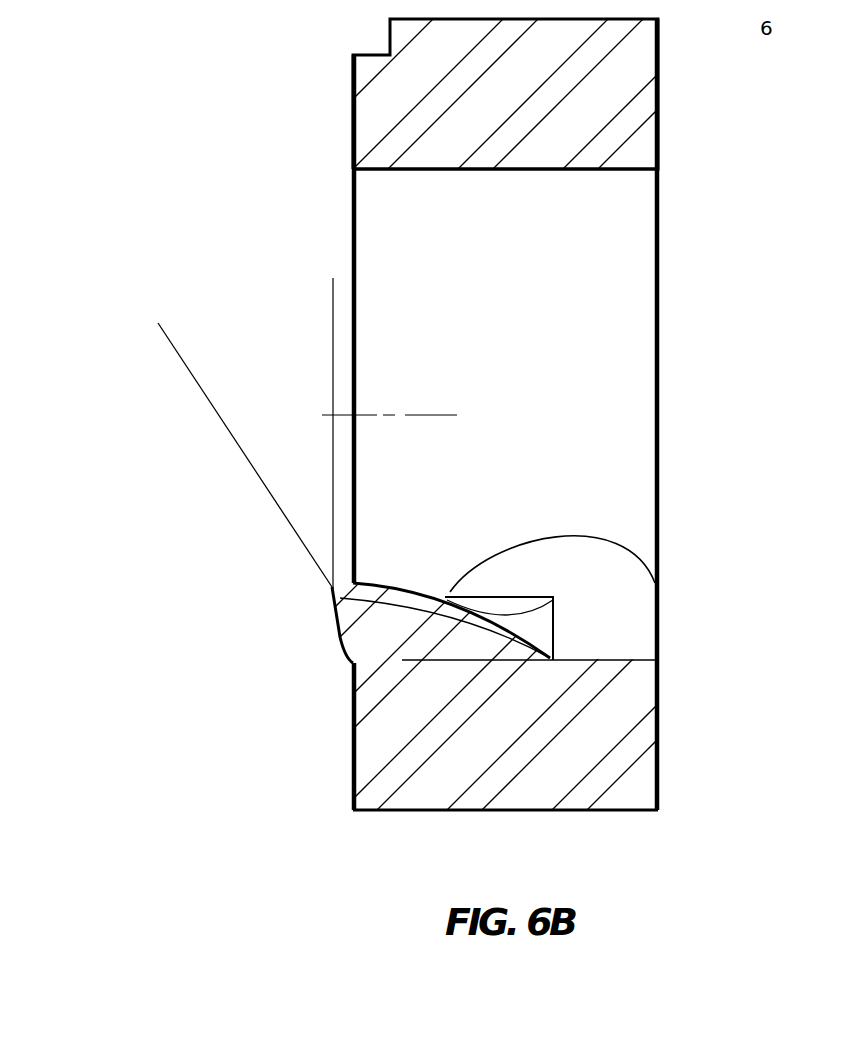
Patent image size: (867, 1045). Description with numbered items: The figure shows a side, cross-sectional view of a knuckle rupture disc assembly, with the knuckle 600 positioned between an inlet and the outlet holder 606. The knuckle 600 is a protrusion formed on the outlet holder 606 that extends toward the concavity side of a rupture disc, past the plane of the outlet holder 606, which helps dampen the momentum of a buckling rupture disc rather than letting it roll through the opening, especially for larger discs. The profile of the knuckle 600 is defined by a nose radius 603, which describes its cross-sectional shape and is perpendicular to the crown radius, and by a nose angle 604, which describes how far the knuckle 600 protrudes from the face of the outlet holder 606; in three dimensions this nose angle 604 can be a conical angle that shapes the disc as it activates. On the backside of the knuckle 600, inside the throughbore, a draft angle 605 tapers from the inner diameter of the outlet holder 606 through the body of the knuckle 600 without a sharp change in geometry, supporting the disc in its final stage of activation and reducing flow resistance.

The knuckle 600 is at (440, 707).
The nose radius 603 is at (213, 552).
The nose angle 604 is at (245, 435).
The draft angle 605 is at (645, 583).
The outlet holder 606 is at (658, 132).